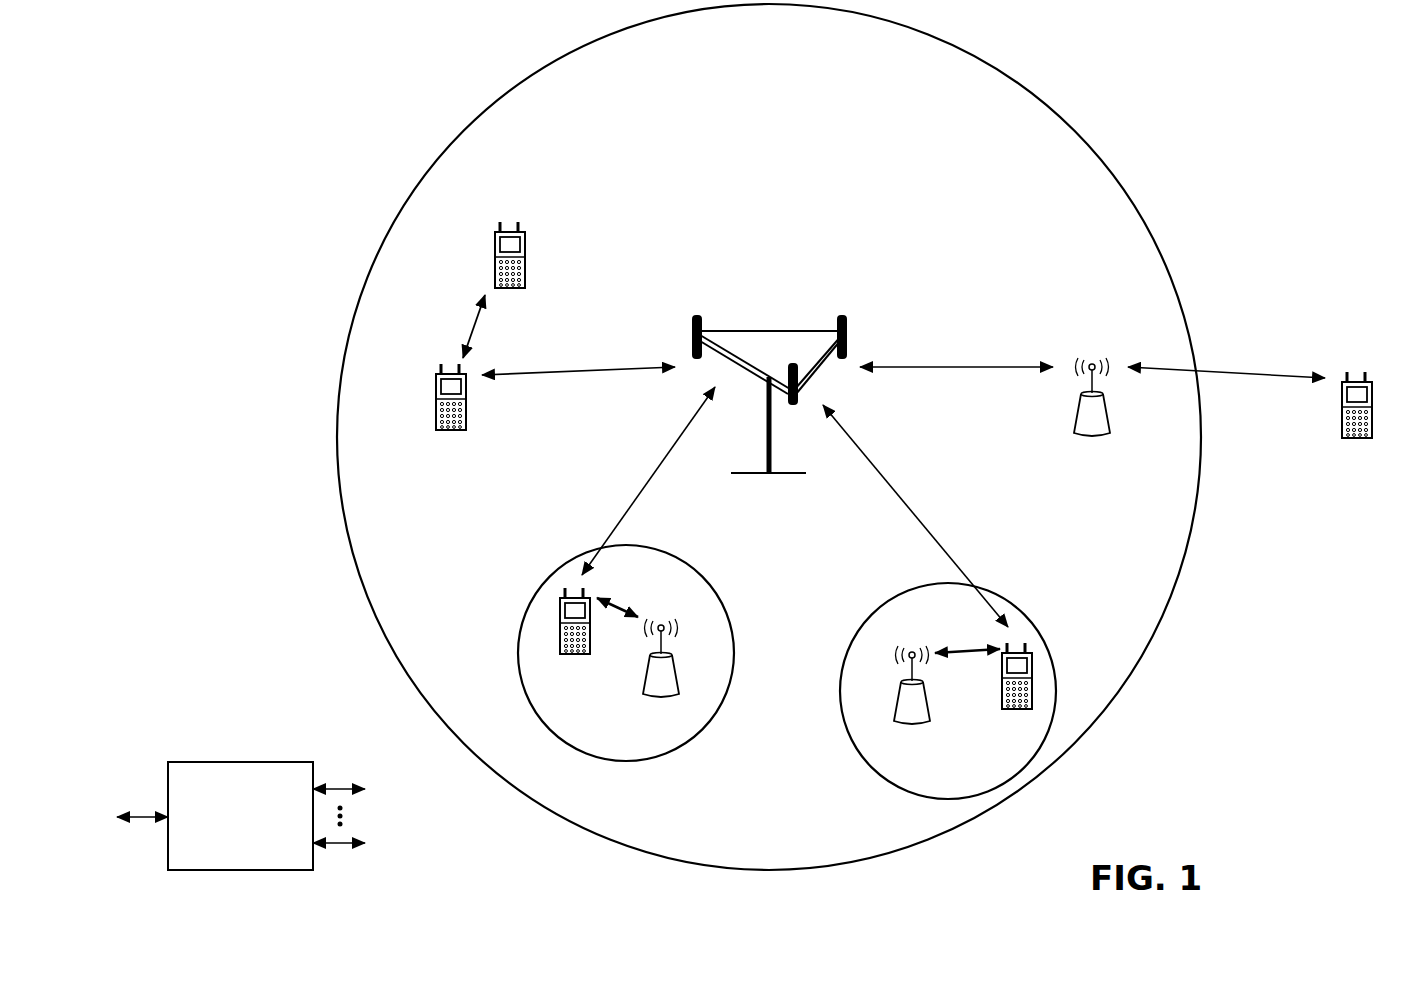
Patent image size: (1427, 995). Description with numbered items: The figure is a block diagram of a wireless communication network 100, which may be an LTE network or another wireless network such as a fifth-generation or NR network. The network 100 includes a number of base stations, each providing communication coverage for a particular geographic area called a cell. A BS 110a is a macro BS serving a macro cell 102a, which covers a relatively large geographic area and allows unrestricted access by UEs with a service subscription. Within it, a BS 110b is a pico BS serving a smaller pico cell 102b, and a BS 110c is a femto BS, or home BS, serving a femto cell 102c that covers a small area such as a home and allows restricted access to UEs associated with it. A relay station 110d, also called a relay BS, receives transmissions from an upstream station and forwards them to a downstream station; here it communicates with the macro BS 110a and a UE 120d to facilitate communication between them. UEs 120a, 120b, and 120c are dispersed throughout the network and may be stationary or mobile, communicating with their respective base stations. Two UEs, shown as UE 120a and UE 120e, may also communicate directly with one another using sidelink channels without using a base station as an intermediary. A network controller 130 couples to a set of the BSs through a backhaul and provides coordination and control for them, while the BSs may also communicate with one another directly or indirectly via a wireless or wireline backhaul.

The network 100 is at (1254, 91).
The macro cell 102a is at (1068, 100).
The pico cell 102b is at (720, 567).
The femto cell 102c is at (867, 616).
The macro BS 110a is at (762, 331).
The pico BS 110b is at (692, 672).
The femto BS 110c is at (896, 708).
The relay station 110d is at (1091, 362).
The UE 120a is at (435, 381).
The UE 120b is at (560, 647).
The UE 120c is at (1003, 698).
The UE 120d is at (1385, 381).
The UE 120e is at (494, 241).
The network controller 130 is at (248, 748).